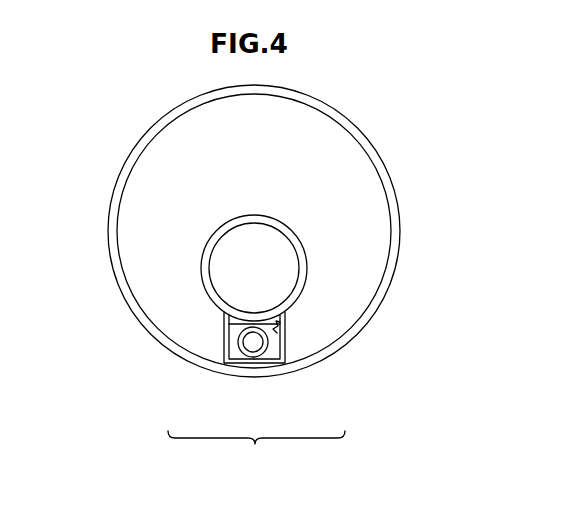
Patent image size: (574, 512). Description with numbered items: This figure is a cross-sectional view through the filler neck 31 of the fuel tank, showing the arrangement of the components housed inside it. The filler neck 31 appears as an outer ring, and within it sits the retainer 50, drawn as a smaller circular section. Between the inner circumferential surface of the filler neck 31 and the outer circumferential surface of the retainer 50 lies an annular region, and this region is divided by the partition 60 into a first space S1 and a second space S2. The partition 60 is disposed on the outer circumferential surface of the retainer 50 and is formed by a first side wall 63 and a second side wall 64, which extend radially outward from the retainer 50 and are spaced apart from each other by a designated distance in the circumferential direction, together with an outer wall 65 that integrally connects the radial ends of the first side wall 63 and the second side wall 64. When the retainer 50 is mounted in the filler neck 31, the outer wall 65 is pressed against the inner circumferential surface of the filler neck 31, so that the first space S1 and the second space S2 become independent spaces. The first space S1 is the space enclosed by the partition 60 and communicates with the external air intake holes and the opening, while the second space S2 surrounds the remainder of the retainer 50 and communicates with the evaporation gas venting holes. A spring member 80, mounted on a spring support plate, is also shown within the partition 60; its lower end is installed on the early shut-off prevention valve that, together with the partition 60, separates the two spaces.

The filler neck 31 is at (131, 163).
The second space S2 is at (328, 186).
The retainer 50 is at (205, 262).
The spring member 80 is at (224, 327).
The first side wall 63 is at (224, 340).
The second side wall 64 is at (282, 340).
The outer wall 65 is at (252, 357).
The first space S1 is at (280, 322).
The partition 60 is at (256, 453).